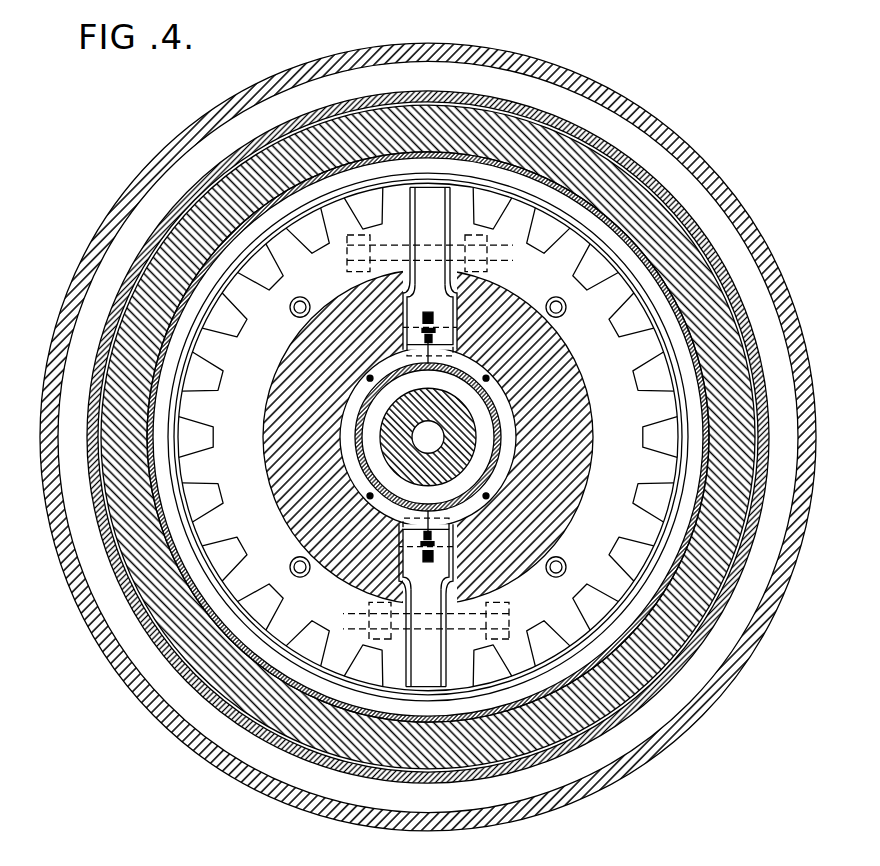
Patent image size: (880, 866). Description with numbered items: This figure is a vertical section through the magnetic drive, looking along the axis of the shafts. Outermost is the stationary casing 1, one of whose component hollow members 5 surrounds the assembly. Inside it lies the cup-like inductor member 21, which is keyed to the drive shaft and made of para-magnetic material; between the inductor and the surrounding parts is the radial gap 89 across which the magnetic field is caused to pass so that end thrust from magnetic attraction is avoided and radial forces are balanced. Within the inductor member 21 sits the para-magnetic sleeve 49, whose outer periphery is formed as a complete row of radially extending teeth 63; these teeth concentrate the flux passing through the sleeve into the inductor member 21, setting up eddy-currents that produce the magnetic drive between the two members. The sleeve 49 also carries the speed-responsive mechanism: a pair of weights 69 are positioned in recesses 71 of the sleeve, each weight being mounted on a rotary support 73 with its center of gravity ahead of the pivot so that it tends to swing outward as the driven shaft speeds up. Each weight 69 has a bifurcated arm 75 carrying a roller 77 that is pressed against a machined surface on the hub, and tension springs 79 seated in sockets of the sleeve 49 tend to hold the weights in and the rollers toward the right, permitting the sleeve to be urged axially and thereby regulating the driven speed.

The stationary casing 1 is at (408, 42).
The hollow member 5 is at (428, 437).
The radial gap 89 is at (428, 442).
The inductor member 21 is at (419, 437).
The teeth 63 is at (449, 452).
The para-magnetic sleeve 49 is at (440, 436).
The roller 77 is at (428, 437).
The recess 71 is at (429, 436).
The weight 69 is at (428, 436).
The bifurcated arm 75 is at (427, 440).
The tension spring 79 is at (430, 439).
The rotary support 73 is at (430, 437).